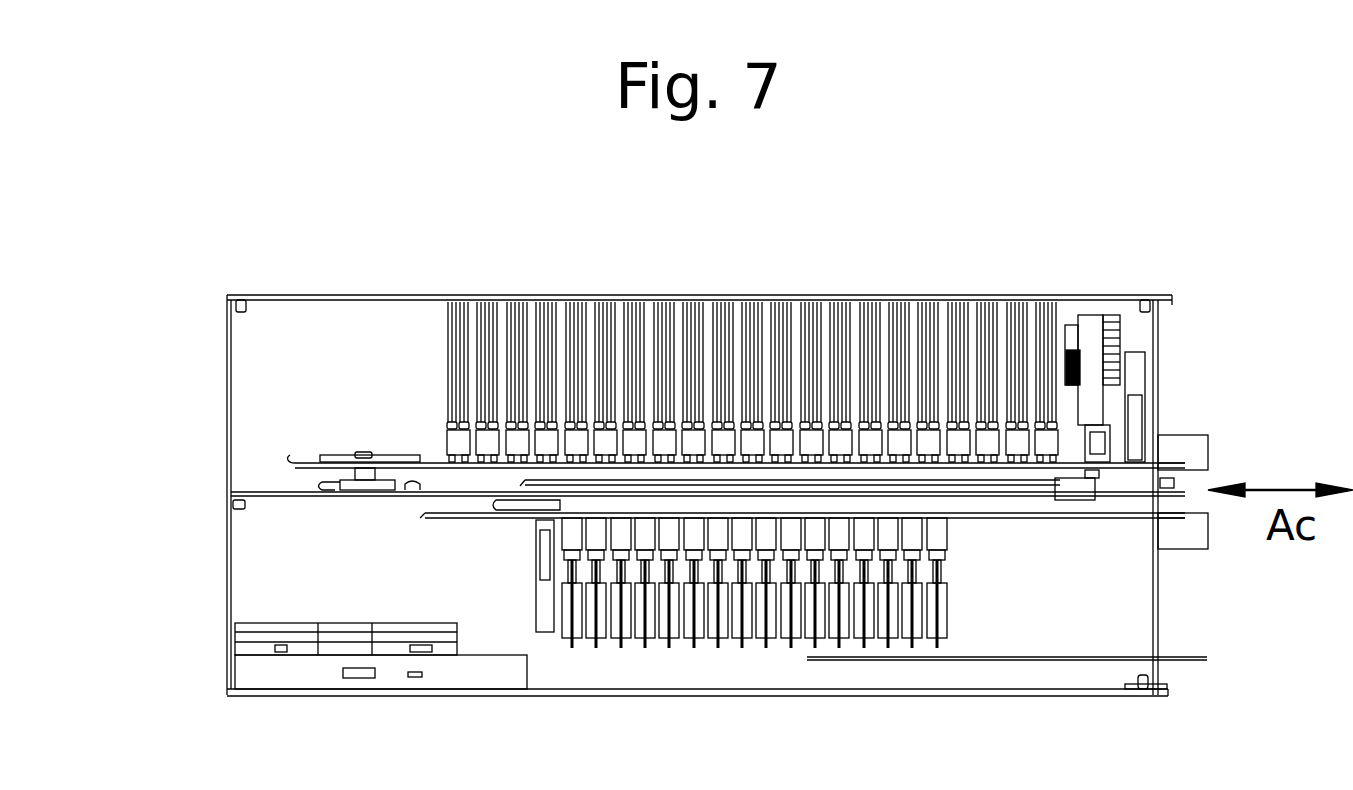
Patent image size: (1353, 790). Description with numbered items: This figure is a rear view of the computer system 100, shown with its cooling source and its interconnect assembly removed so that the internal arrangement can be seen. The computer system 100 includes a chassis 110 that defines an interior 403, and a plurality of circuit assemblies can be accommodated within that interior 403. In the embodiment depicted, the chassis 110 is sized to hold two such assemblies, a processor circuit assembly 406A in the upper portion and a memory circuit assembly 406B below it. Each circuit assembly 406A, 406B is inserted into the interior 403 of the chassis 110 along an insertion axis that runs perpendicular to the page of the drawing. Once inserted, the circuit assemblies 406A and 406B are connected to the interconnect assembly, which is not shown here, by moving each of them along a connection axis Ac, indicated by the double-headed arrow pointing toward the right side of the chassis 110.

The computer system 100 is at (700, 268).
The chassis 110 is at (322, 296).
The interior 403 is at (290, 368).
The processor circuit assembly 406A is at (300, 464).
The memory circuit assembly 406B is at (425, 516).